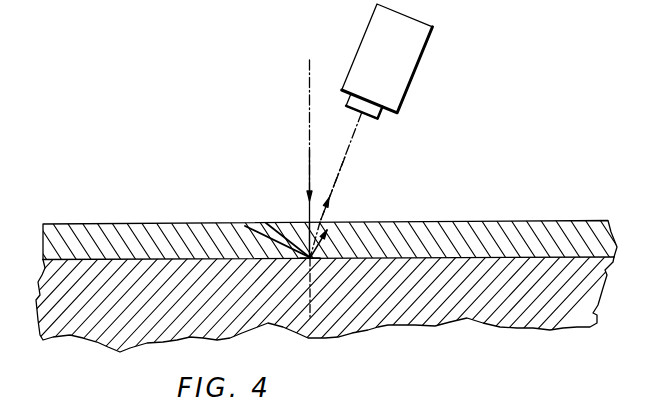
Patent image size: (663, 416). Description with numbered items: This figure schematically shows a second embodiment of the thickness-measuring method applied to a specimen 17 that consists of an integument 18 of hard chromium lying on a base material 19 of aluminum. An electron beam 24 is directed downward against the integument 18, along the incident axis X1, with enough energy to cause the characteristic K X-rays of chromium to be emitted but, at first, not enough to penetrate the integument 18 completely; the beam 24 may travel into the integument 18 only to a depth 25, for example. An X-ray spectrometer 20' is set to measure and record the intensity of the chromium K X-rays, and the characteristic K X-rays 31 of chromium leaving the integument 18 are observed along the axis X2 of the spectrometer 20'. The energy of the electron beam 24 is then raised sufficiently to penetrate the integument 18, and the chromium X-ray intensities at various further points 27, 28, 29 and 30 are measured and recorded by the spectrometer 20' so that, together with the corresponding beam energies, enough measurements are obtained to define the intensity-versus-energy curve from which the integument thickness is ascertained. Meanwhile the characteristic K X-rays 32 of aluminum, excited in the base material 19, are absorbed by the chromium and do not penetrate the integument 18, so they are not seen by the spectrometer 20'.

The specimen 17 is at (321, 253).
The integument 18 is at (443, 230).
The base material 19 is at (457, 302).
The X-ray spectrometer 20' is at (411, 61).
The electron beam 24 is at (309, 148).
The depth 25 is at (309, 239).
The point 27 is at (266, 223).
The point 28 is at (245, 226).
The point 29 is at (313, 262).
The point 30 is at (312, 262).
The characteristic K X-rays of chromium 31 is at (335, 182).
The characteristic K X-rays of aluminum 32 is at (320, 254).
The incident beam axis X1 is at (309, 98).
The axis X2 is at (347, 153).